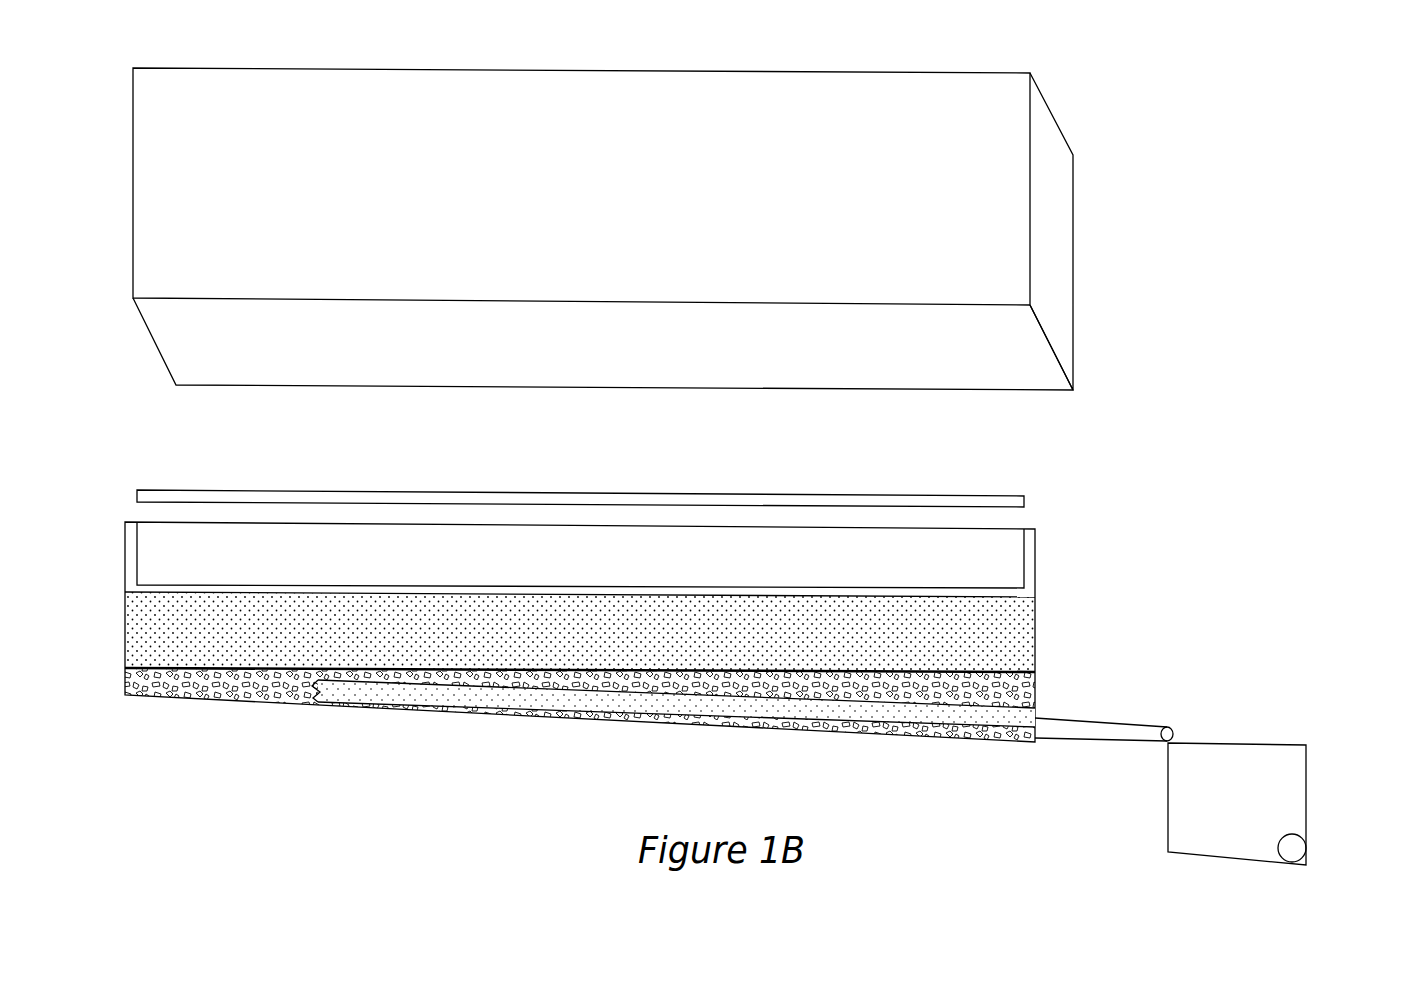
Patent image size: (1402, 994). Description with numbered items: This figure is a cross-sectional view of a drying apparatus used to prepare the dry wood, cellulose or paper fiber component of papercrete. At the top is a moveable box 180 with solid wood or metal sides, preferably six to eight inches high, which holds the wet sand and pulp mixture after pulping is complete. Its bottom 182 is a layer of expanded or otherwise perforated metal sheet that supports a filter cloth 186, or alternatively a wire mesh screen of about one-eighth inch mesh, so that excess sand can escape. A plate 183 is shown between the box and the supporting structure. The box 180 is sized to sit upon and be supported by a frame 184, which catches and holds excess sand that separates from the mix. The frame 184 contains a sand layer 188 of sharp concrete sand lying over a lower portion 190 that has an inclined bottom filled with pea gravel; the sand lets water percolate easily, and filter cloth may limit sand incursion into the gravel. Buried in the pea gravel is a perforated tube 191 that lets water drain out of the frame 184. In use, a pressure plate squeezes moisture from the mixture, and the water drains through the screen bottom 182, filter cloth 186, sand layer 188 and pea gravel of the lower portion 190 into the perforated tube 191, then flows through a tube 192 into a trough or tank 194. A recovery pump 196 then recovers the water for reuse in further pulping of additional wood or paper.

The moveable box 180 is at (1058, 282).
The bottom 182 is at (922, 370).
The cover plate 183 is at (597, 492).
The frame 184 is at (1035, 632).
The filter cloth 186 is at (1028, 578).
The sand layer 188 is at (1023, 660).
The lower portion 190 is at (1037, 712).
The perforated tube 191 is at (558, 718).
The tube 192 is at (1147, 722).
The trough or tank 194 is at (1287, 742).
The recovery pump 196 is at (1297, 852).